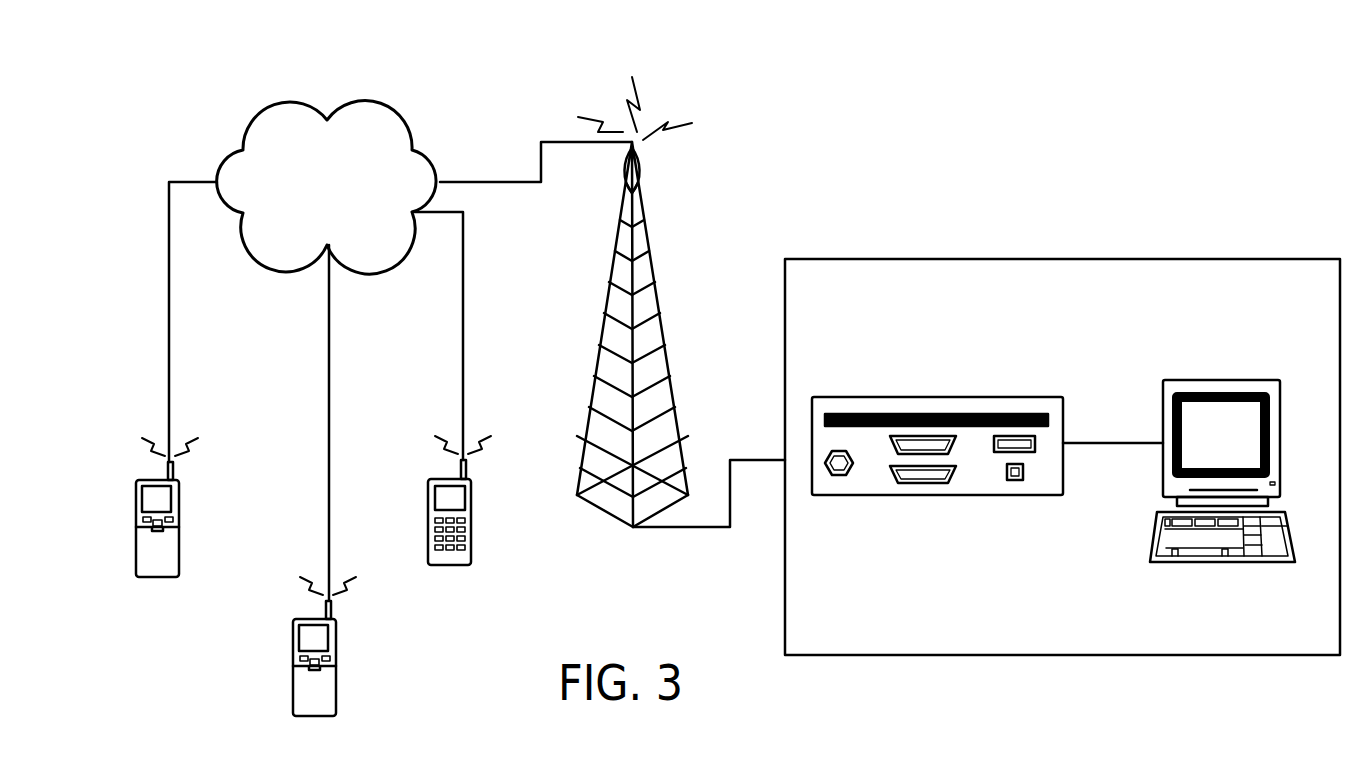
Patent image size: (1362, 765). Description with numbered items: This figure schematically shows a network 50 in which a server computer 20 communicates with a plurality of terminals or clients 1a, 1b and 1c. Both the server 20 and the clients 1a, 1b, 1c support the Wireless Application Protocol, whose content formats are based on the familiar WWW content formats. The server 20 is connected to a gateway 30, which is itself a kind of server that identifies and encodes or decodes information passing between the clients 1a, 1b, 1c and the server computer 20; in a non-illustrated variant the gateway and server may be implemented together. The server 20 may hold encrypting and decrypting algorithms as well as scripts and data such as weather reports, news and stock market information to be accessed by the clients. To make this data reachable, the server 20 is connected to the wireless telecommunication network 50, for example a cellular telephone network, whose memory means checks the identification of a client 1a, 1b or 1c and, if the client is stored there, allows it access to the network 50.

The network 50 is at (445, 97).
The client 1a is at (179, 564).
The client 1b is at (336, 704).
The client 1c is at (471, 553).
The gateway 30 is at (1027, 397).
The server computer 20 is at (1263, 562).